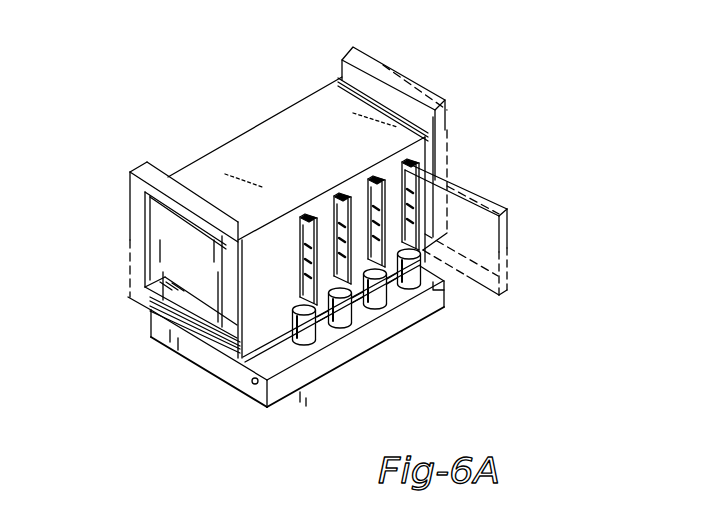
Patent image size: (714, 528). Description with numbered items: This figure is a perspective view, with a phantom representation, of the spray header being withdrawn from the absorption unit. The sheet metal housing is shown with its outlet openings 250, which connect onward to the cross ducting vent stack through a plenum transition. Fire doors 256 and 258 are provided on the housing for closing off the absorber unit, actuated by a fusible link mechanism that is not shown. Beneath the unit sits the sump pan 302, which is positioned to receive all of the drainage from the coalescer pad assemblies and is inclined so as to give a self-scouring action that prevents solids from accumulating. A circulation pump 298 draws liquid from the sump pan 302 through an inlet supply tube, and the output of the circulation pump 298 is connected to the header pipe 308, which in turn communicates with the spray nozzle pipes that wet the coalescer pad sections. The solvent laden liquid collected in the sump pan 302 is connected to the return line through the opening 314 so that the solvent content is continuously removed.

The outlet openings 250 is at (245, 219).
The fire door 256 is at (424, 147).
The fire door 258 is at (148, 166).
The circulation pump 298 is at (377, 333).
The sump pan 302 is at (299, 386).
The header pipe 308 is at (338, 210).
The opening 314 is at (252, 380).